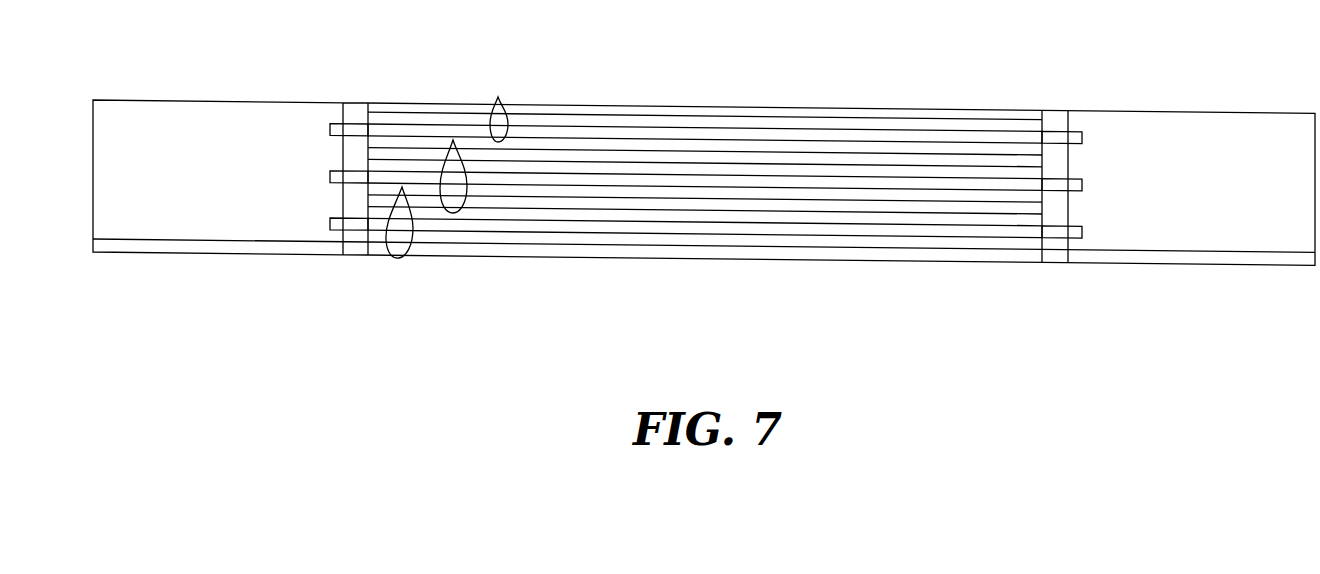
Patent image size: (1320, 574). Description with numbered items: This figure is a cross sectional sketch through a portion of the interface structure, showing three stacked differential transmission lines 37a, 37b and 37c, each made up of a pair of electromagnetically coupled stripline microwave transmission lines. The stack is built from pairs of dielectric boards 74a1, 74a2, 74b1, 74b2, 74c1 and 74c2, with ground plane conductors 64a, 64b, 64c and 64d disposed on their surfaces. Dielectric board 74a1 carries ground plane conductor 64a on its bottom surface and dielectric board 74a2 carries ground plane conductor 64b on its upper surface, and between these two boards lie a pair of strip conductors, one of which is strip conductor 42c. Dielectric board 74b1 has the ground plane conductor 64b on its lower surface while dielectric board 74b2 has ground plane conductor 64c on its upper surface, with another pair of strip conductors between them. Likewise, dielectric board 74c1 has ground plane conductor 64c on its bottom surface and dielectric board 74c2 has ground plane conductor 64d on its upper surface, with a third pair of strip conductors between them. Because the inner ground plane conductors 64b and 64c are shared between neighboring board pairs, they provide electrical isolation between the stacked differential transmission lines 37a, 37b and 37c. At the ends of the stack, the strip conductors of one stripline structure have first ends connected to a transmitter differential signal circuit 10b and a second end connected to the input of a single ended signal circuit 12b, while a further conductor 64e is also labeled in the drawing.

The transmitter differential signal circuit 10b is at (228, 100).
The single ended signal circuit 12b is at (1175, 113).
The stacked differential transmission line 37a is at (402, 187).
The stacked differential transmission line 37b is at (453, 140).
The stacked differential transmission line 37c is at (498, 97).
The dielectric board 74a1 is at (520, 237).
The dielectric board 74a2 is at (607, 215).
The dielectric board 74b1 is at (697, 193).
The dielectric board 74b2 is at (782, 172).
The dielectric board 74c1 is at (870, 150).
The dielectric board 74c2 is at (955, 128).
The strip conductor 42c is at (643, 228).
The ground plane conductor 64a is at (732, 253).
The ground plane conductor 64b is at (823, 205).
The ground plane conductor 64c is at (932, 162).
The ground plane conductor 64d is at (1033, 115).
The pad 64e is at (1043, 165).